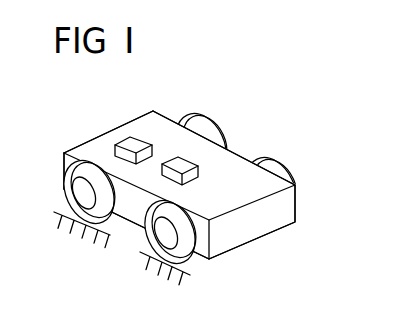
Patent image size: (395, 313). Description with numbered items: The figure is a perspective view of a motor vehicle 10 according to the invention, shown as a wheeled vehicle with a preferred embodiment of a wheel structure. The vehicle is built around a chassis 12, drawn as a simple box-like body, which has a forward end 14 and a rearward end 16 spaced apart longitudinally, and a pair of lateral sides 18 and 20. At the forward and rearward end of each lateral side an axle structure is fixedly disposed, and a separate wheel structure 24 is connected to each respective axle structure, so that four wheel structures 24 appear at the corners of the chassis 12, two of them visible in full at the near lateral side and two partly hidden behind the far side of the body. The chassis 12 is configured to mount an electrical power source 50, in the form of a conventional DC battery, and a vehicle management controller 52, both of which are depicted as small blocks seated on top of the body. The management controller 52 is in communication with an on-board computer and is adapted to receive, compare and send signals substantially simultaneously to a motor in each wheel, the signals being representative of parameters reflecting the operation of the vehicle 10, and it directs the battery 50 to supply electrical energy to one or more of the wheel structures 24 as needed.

The motor vehicle 10 is at (180, 178).
The chassis 12 is at (185, 189).
The forward end 14 is at (253, 230).
The rearward end 16 is at (92, 142).
The lateral side 18 is at (250, 160).
The lateral side 20 is at (128, 213).
The wheel structure 24 is at (180, 187).
The electrical power source 50 is at (133, 135).
The vehicle management controller 52 is at (176, 157).